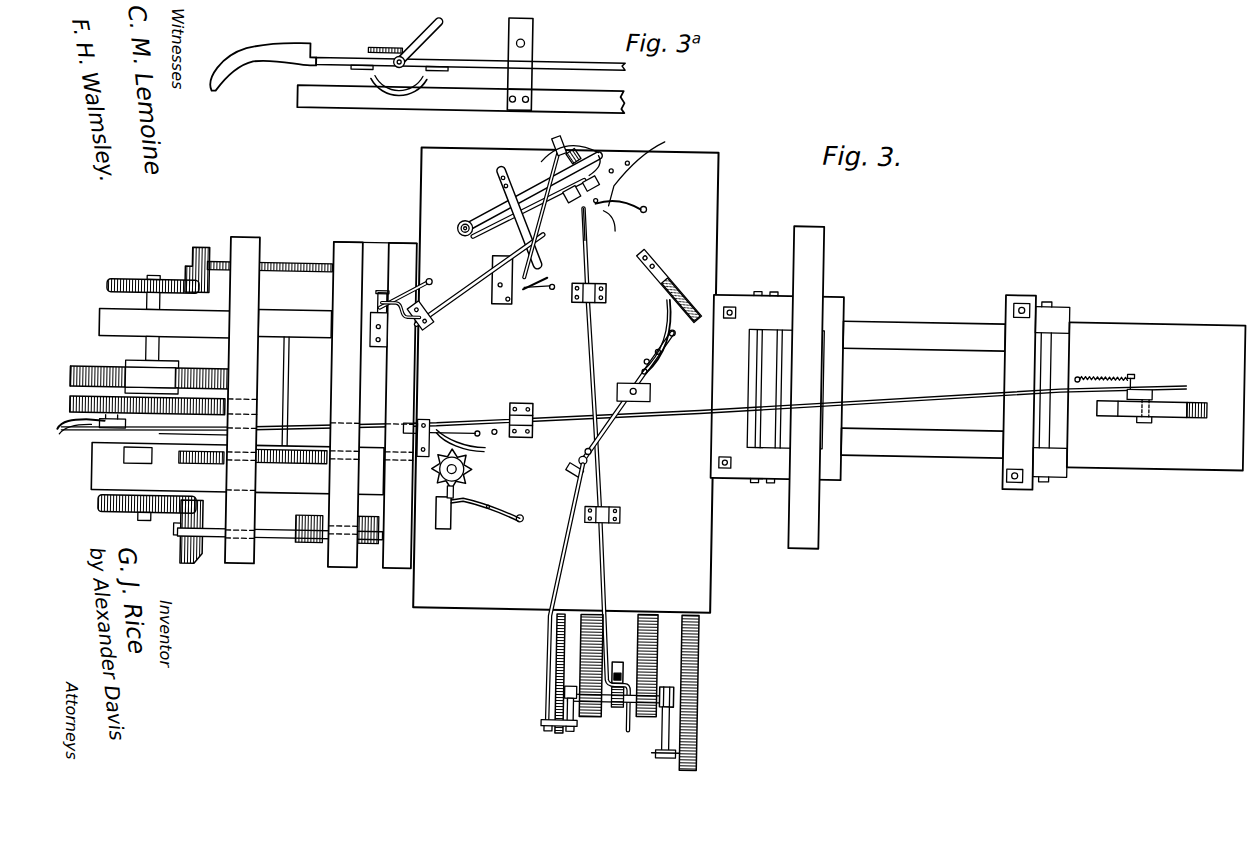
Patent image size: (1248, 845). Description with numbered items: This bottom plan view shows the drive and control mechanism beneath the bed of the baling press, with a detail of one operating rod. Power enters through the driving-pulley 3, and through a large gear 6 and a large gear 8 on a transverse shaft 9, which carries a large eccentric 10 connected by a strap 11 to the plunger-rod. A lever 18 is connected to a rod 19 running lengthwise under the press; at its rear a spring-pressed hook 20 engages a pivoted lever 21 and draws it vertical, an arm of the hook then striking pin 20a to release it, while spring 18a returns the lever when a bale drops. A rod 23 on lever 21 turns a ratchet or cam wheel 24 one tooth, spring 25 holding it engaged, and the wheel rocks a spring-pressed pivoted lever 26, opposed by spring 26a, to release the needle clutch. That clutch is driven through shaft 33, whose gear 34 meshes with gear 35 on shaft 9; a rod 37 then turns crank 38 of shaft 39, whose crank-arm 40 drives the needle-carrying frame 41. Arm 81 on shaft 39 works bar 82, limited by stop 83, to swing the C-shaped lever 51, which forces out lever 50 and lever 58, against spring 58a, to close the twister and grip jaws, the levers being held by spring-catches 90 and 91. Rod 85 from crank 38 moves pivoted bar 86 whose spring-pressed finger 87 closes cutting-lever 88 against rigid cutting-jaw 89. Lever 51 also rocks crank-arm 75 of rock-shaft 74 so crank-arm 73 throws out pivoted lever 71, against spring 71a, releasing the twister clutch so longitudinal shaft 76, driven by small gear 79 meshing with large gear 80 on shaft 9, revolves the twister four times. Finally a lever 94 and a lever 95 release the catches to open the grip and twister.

In FIG. 3, the driving-pulley 3 is at (318, 547).
In FIG. 3, the large gear 6 is at (290, 468).
In FIG. 3, the large gear 8 is at (72, 412).
In FIG. 3, the transverse shaft 9 is at (145, 306).
In FIG. 3, the eccentric 10 is at (100, 378).
In FIG. 3, the strap 11 is at (78, 382).
In FIG. 3, the lever 18 is at (1140, 380).
In FIG. 3, the spring 18a is at (1110, 362).
In FIG. 3A, the rod 19 is at (583, 67).
In FIG. 3, the rod 19 is at (262, 430).
In FIG. 3A, the spring-pressed hook 20 is at (329, 57).
In FIG. 3, the spring-pressed hook 20 is at (62, 441).
In FIG. 3A, the pin 20a is at (519, 46).
In FIG. 3, the pivoted lever 21 is at (100, 434).
In FIG. 3, the rod 23 is at (178, 448).
In FIG. 3, the ratchet or cam wheel 24 is at (474, 472).
In FIG. 3, the spring 25 is at (470, 433).
In FIG. 3, the spring-pressed pivoted lever 26 is at (438, 500).
In FIG. 3, the spring 26a is at (500, 512).
In FIG. 3, the shaft 33 is at (292, 535).
In FIG. 3, the gear 34 is at (200, 570).
In FIG. 3, the gear 35 is at (100, 509).
In FIG. 3, the rod 37 is at (561, 670).
In FIG. 3, the crank 38 is at (570, 712).
In FIG. 3, the shaft 39 is at (680, 696).
In FIG. 3, the crank-arm 40 is at (676, 729).
In FIG. 3, the needle-carrying frame 41 is at (703, 670).
In FIG. 3, the spring-pressed pivoted lever 50 is at (576, 153).
In FIG. 3, the C-shaped lever 51 is at (484, 210).
In FIG. 3, the pivoted lever 58 is at (605, 215).
In FIG. 3, the spring 58a is at (650, 142).
In FIG. 3, the pivoted lever 71 is at (376, 300).
In FIG. 3, the spring 71a is at (410, 292).
In FIG. 3, the crank-arm 73 is at (398, 318).
In FIG. 3, the rock-shaft 74 is at (460, 298).
In FIG. 3, the crank-arm 75 is at (588, 229).
In FIG. 3, the longitudinal shaft 76 is at (300, 268).
In FIG. 3, the small gear 79 is at (200, 255).
In FIG. 3, the large gear 80 is at (140, 287).
In FIG. 3, the arm 81 is at (624, 660).
In FIG. 3, the bar 82 is at (589, 335).
In FIG. 3, the stop 83 is at (600, 285).
In FIG. 3, the rod 85 is at (560, 555).
In FIG. 3, the pivoted bar 86 is at (612, 426).
In FIG. 3, the spring-pressed finger 87 is at (666, 305).
In FIG. 3, the cutting-lever 88 is at (701, 315).
In FIG. 3, the rigid cutting-jaw 89 is at (673, 335).
In FIG. 3, the spring-catch 90 is at (556, 150).
In FIG. 3, the spring-catch 91 is at (600, 185).
In FIG. 3, the lever 94 is at (537, 288).
In FIG. 3, the lever 95 is at (490, 262).